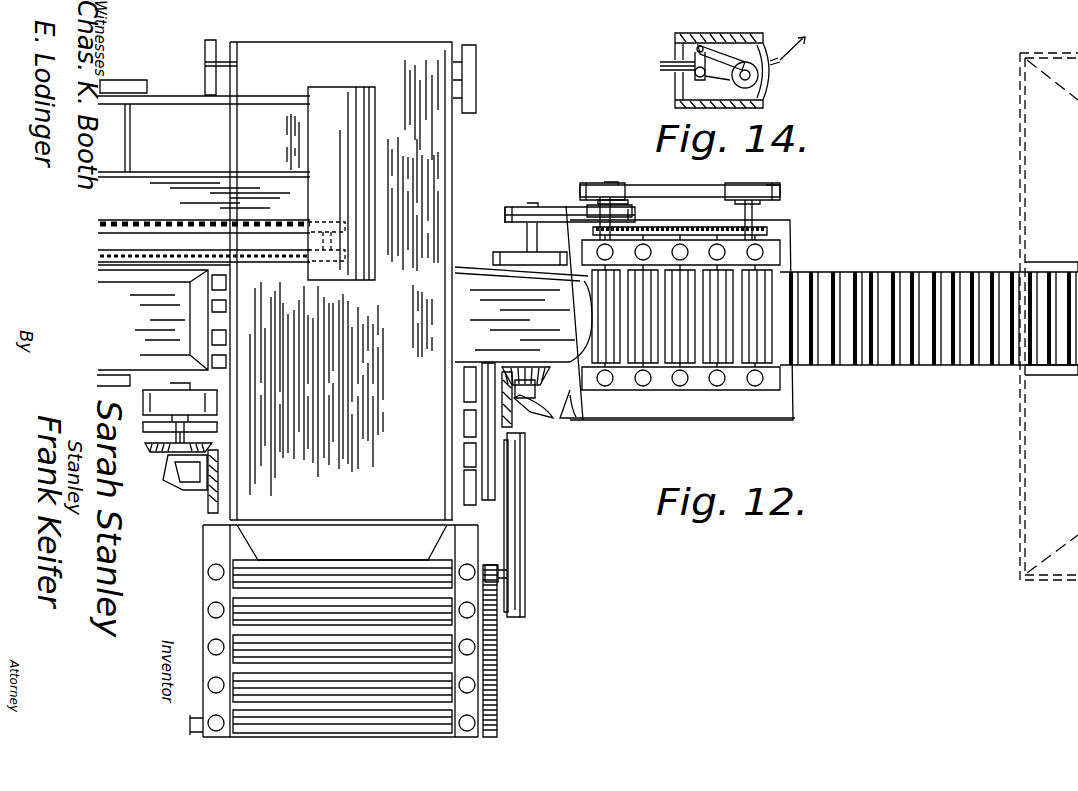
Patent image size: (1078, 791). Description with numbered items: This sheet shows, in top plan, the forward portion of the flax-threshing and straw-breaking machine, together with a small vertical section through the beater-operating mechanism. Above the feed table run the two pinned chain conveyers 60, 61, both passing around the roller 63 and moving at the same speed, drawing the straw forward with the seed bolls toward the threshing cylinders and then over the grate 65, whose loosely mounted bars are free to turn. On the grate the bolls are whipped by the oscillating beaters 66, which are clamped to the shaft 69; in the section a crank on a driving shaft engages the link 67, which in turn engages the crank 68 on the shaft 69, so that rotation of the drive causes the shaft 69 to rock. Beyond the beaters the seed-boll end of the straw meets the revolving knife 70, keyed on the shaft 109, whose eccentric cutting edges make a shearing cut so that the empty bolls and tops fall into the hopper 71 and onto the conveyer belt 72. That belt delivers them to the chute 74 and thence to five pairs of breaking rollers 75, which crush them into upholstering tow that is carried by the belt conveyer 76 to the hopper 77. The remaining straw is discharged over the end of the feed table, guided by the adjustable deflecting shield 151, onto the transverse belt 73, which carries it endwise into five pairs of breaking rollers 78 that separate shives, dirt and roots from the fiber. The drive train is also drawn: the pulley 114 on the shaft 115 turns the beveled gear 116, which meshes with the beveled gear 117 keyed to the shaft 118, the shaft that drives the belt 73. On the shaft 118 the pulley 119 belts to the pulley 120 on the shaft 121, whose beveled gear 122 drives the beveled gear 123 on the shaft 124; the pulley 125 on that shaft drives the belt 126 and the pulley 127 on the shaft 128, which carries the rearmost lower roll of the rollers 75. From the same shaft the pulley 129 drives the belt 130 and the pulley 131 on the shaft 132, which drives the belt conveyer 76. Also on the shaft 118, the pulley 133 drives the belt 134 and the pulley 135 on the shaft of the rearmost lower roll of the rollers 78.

In FIG. 12, the chain conveyer 60 is at (125, 260).
In FIG. 12, the chain conveyer 61 is at (118, 221).
In FIG. 12, the roller 63 is at (320, 221).
In FIG. 14, the grate 65 is at (758, 73).
In FIG. 14, the beaters 66 is at (792, 42).
In FIG. 14, the link 67 is at (718, 48).
In FIG. 14, the crank 68 is at (700, 60).
In FIG. 14, the shaft 69 is at (695, 76).
In FIG. 12, the revolving knife 70 is at (127, 272).
In FIG. 12, the hopper 71 is at (110, 378).
In FIG. 12, the conveyer belt 72 is at (160, 335).
In FIG. 12, the belt 73 is at (430, 152).
In FIG. 12, the chute 74 is at (570, 262).
In FIG. 12, the breaking rollers 75 is at (762, 282).
In FIG. 12, the belt conveyer 76 is at (864, 285).
In FIG. 12, the hopper 77 is at (1030, 191).
In FIG. 12, the breaking rollers 78 is at (447, 677).
In FIG. 12, the shaft 109 is at (120, 156).
In FIG. 12, the pulley 114 is at (150, 426).
In FIG. 12, the shaft 115 is at (180, 441).
In FIG. 12, the beveled gear 116 is at (152, 447).
In FIG. 12, the beveled gear 117 is at (205, 499).
In FIG. 12, the shaft 118 is at (217, 482).
In FIG. 12, the pulley 119 is at (475, 467).
In FIG. 12, the pulley 120 is at (470, 403).
In FIG. 12, the shaft 121 is at (513, 413).
In FIG. 12, the beveled gear 122 is at (576, 398).
In FIG. 12, the beveled gear 123 is at (535, 389).
In FIG. 12, the shaft 124 is at (510, 368).
In FIG. 12, the pulley 125 is at (514, 207).
In FIG. 12, the belt 126 is at (565, 212).
In FIG. 12, the pulley 127 is at (632, 212).
In FIG. 12, the shaft 128 is at (620, 178).
In FIG. 12, the pulley 129 is at (587, 184).
In FIG. 12, the belt 130 is at (668, 181).
In FIG. 12, the pulley 131 is at (732, 186).
In FIG. 12, the shaft 132 is at (772, 181).
In FIG. 12, the pulley 133 is at (525, 481).
In FIG. 12, the belt 134 is at (508, 557).
In FIG. 12, the pulley 135 is at (525, 527).
In FIG. 12, the deflecting shield 151 is at (375, 107).